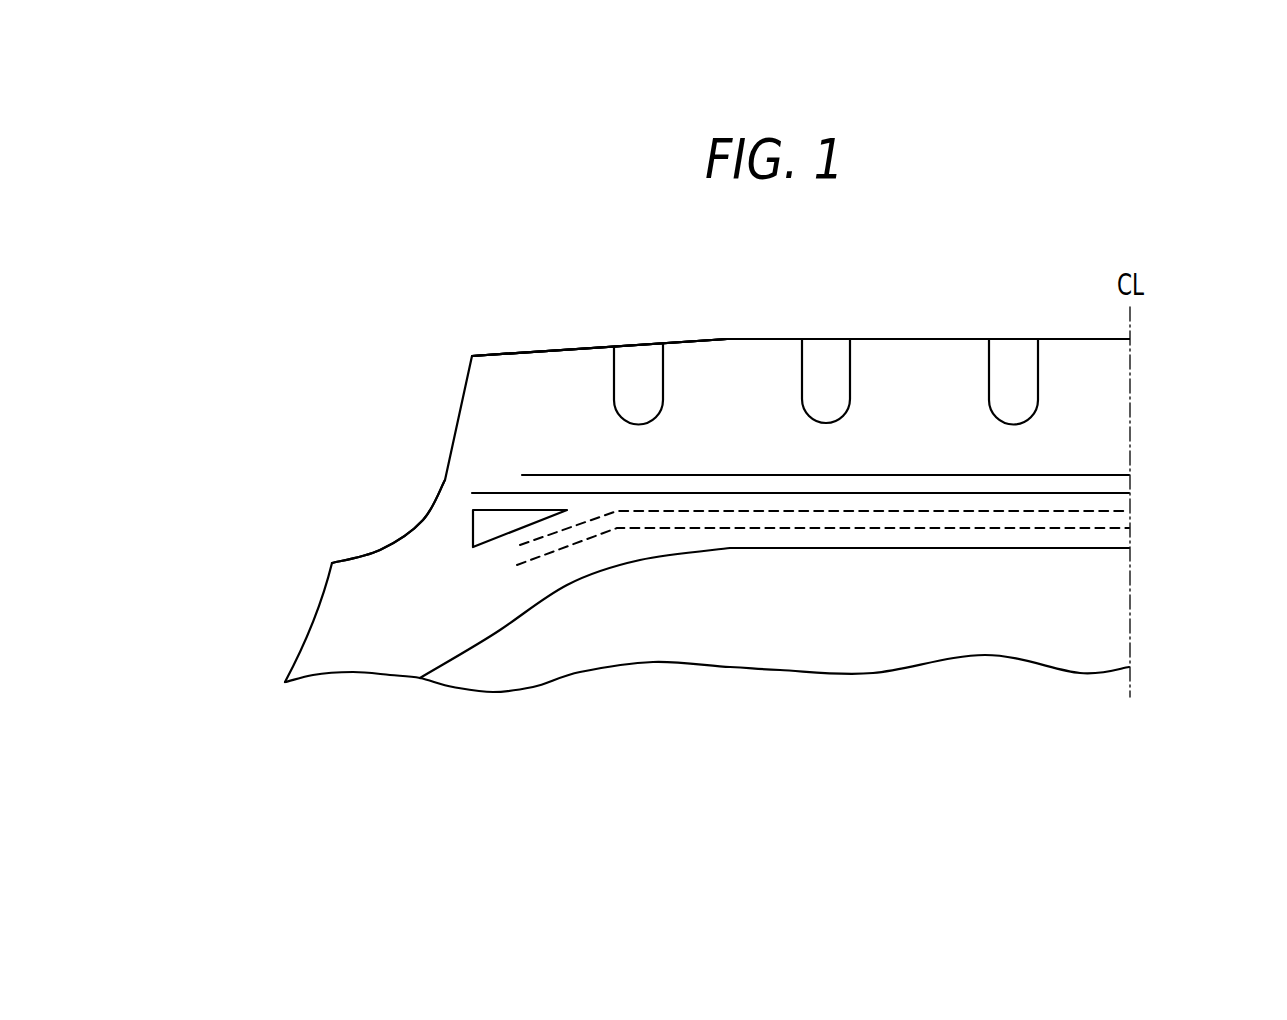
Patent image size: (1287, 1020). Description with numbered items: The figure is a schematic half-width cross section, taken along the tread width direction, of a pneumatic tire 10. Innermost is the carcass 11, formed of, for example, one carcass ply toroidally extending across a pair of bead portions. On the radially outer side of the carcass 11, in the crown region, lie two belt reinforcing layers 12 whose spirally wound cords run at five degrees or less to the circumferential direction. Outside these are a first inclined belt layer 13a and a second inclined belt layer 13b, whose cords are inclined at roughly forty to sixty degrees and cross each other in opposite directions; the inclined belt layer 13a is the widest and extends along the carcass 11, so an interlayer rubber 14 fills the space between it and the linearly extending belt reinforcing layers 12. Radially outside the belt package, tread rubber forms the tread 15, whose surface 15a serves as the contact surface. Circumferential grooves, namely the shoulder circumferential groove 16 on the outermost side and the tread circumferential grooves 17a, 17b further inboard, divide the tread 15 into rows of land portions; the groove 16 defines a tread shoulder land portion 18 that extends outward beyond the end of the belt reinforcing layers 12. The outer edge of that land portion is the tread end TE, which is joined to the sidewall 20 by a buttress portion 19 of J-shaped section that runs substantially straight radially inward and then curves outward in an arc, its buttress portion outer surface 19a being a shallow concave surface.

The pneumatic tire 10 is at (877, 292).
The carcass 11 is at (1130, 548).
The belt reinforcing layers 12 is at (1134, 505).
The inclined belt layer 13a is at (1130, 493).
The inclined belt layer 13b is at (1130, 475).
The interlayer rubber 14 is at (478, 527).
The tread 15 is at (1077, 392).
The surface of the tread 15a is at (728, 338).
The shoulder circumferential groove 16 is at (637, 392).
The tread circumferential groove 17a is at (825, 385).
The tread circumferential groove 17b is at (1011, 380).
The tread shoulder land portion 18 is at (566, 358).
The buttress portion 19 is at (437, 437).
The buttress portion outer surface 19a is at (445, 478).
The sidewall 20 is at (302, 632).
The tread end TE is at (472, 355).